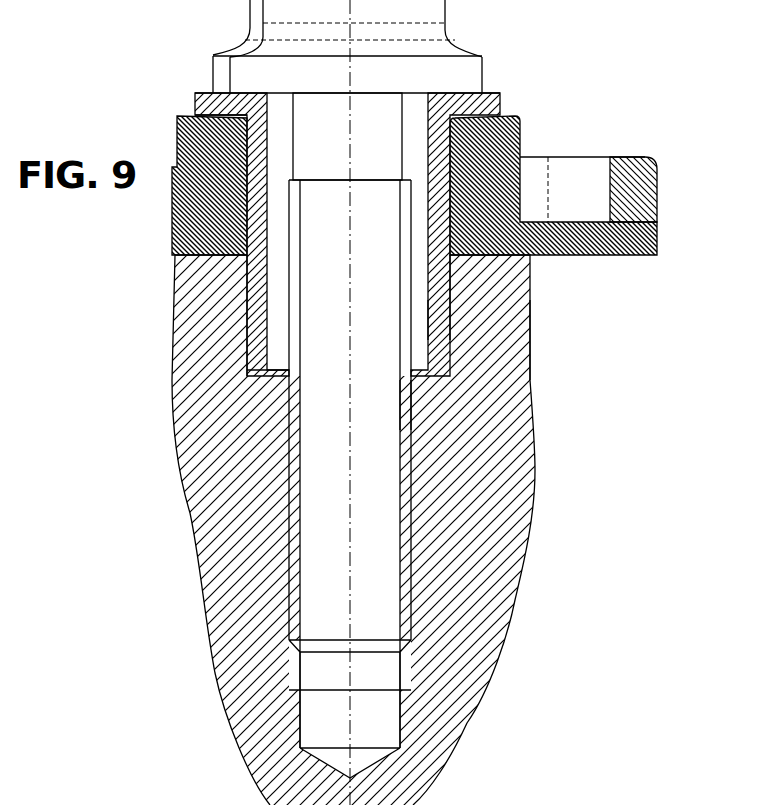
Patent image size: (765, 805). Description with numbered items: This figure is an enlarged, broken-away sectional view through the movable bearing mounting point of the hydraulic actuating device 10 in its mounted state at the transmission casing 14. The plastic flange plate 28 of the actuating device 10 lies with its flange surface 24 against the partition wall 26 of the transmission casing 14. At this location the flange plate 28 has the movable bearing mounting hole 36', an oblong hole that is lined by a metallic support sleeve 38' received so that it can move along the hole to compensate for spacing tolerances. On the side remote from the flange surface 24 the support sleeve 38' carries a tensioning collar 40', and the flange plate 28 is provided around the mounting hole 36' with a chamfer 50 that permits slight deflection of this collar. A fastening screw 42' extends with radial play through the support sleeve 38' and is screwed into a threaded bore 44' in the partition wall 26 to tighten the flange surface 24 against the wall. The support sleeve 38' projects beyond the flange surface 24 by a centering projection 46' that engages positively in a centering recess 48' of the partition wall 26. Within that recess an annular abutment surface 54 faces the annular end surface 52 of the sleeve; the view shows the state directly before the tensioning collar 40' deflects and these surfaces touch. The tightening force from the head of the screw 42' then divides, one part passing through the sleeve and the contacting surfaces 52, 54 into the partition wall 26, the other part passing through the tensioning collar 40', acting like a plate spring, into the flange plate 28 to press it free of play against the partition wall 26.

The hydraulic actuating device 10 is at (622, 136).
The transmission casing 14 is at (216, 674).
The flange surface 24 is at (500, 257).
The partition wall 26 is at (495, 365).
The flange plate 28 is at (641, 179).
The movable bearing mounting hole 36' is at (391, 185).
The support sleeve 38' is at (187, 315).
The tensioning collar 40' is at (375, 213).
The fastening screw 42' is at (350, 420).
The threaded bore 44' is at (350, 699).
The centering projection 46' is at (394, 331).
The centering recess 48' is at (523, 297).
The chamfer 50 is at (228, 117).
The annular end surface 52 is at (435, 380).
The annular abutment surface 54 is at (273, 373).